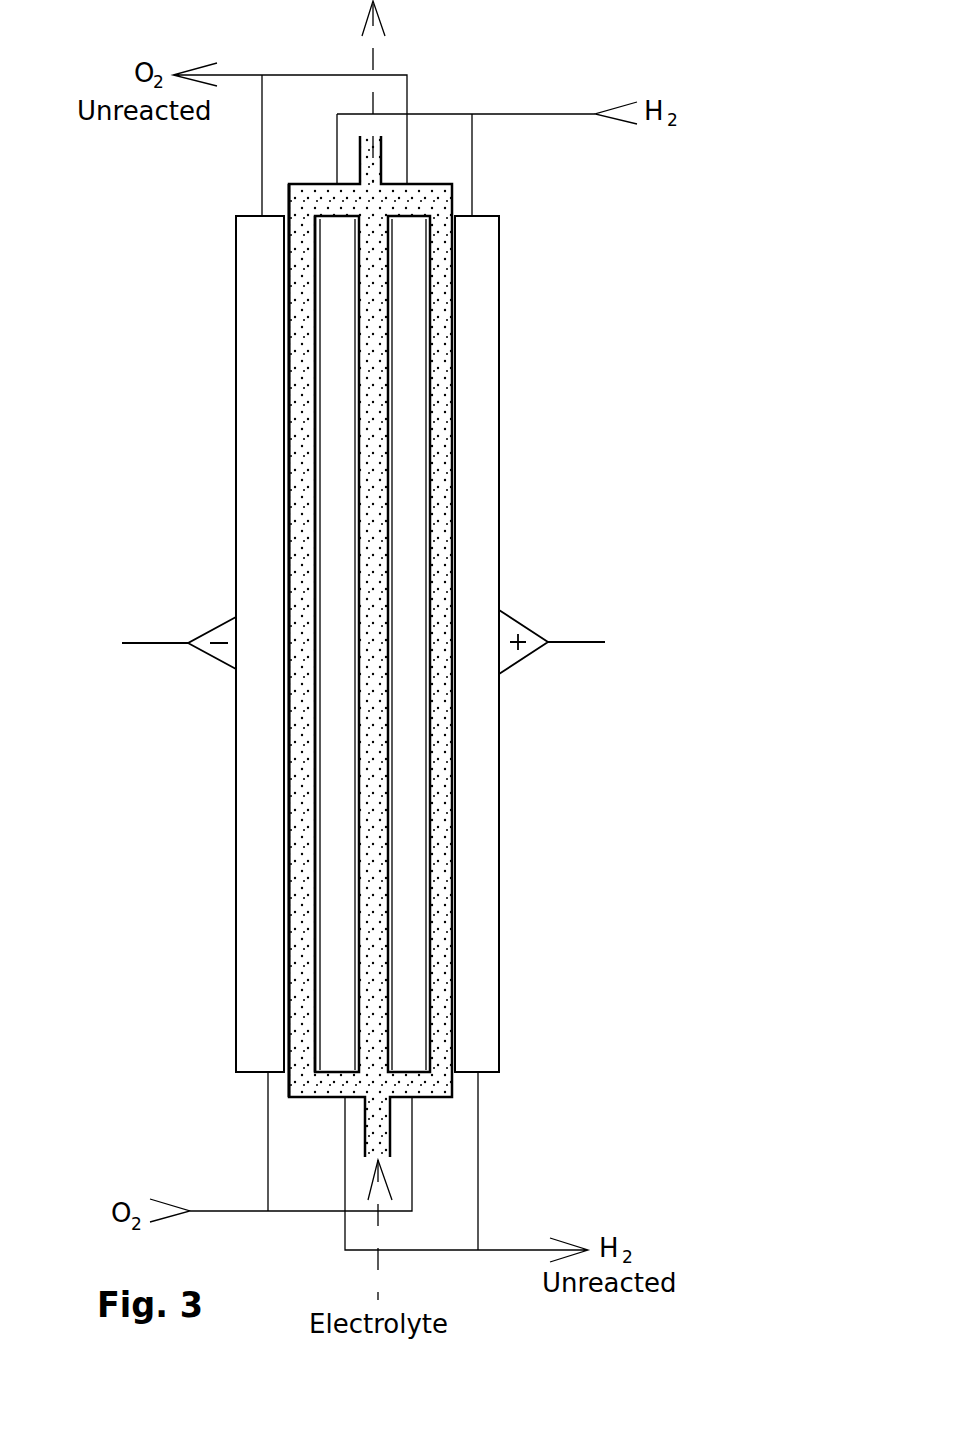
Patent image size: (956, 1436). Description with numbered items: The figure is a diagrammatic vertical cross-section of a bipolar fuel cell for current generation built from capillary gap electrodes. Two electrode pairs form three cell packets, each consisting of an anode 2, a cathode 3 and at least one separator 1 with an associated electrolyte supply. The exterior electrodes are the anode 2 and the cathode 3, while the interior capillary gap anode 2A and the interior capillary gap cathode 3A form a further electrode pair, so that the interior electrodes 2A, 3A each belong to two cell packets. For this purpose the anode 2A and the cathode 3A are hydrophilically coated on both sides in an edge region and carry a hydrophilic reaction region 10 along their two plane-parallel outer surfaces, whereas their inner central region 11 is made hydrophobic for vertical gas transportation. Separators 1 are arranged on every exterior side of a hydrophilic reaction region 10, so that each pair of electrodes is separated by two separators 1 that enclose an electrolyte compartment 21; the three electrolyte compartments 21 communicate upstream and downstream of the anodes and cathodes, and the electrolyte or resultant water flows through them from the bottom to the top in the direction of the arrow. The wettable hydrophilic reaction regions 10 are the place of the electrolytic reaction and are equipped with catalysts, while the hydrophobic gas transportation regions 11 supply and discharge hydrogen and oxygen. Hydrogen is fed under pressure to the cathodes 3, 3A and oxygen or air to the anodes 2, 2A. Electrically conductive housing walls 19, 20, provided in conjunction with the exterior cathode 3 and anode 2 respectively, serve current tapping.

The separator 1 is at (313, 457).
The anode 2 is at (250, 993).
The interior capillary gap anode 2A is at (402, 295).
The cathode 3 is at (473, 482).
The capillary gap cathode 3A is at (333, 824).
The hydrophilic reaction region 10 is at (282, 502).
The hydrophobic gas transportation region 11 is at (263, 538).
The housing wall 19 is at (237, 780).
The housing wall 20 is at (500, 558).
The electrolyte compartment 21 is at (300, 870).